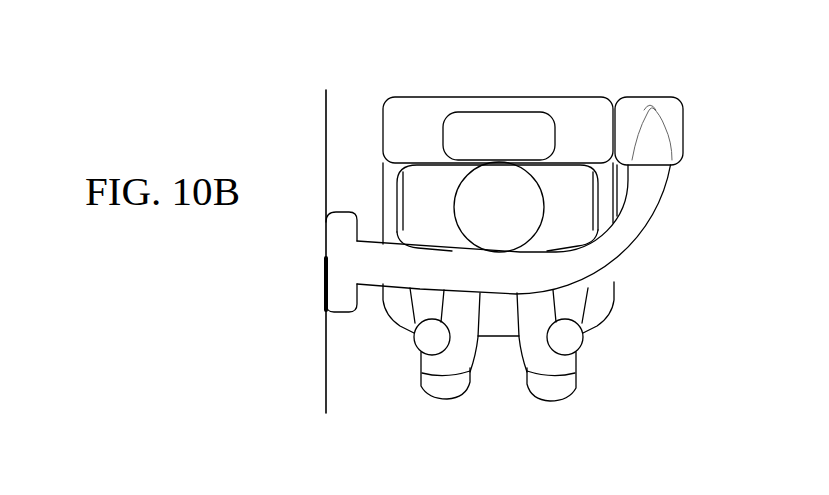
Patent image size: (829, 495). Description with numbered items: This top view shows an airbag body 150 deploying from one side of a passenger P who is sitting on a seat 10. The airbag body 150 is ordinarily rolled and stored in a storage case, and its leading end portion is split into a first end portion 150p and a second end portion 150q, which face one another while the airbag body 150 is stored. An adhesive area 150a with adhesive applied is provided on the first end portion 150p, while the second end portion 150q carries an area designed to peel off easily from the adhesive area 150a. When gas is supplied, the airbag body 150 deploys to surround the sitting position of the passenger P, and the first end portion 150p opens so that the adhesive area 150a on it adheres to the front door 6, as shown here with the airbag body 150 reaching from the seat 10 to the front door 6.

The front door 6 is at (325, 357).
The seat 10 is at (533, 227).
The passenger P is at (459, 209).
The airbag body 150 is at (660, 196).
The adhesive area 150a is at (325, 292).
The first end portion 150p is at (338, 313).
The second end portion 150q is at (338, 211).